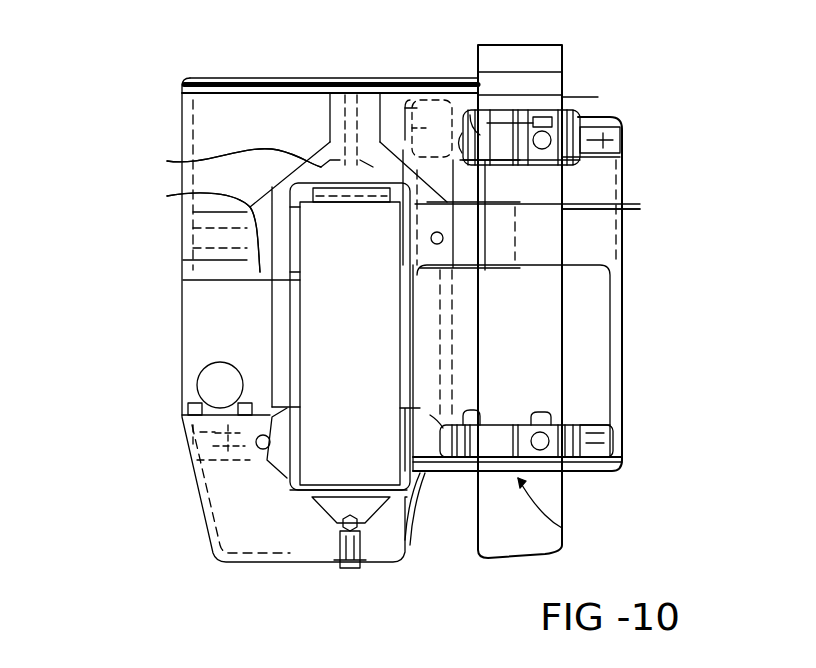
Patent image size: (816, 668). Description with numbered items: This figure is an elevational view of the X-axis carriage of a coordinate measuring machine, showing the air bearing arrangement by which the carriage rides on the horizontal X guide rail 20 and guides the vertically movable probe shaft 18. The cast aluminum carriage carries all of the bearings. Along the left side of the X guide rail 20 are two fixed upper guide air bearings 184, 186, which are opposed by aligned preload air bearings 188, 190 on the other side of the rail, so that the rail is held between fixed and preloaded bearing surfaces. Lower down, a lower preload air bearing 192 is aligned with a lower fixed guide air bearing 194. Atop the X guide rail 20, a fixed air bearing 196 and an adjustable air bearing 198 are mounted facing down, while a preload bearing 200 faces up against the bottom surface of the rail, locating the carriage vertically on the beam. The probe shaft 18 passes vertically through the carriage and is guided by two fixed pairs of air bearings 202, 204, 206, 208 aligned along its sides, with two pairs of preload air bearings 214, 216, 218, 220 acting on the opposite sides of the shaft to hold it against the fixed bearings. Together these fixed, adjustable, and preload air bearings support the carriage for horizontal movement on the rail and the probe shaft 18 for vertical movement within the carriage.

The probe shaft 18 is at (563, 508).
The X guide rail 20 is at (324, 316).
The fixed upper guide air bearing 184 is at (167, 196).
The fixed upper guide air bearing 186 is at (167, 196).
The preload air bearing 188 is at (640, 209).
The preload air bearing 190 is at (683, 220).
The lower preload air bearing 192 is at (273, 470).
The lower fixed guide air bearing 194 is at (413, 537).
The fixed air bearing 196 is at (167, 160).
The adjustable air bearing 198 is at (167, 160).
The preload bearing 200 is at (330, 515).
The fixed air bearing 202 is at (598, 97).
The fixed air bearing 204 is at (543, 413).
The fixed air bearing 206 is at (587, 116).
The fixed air bearing 208 is at (573, 420).
The preload air bearing 214 is at (465, 117).
The preload air bearing 216 is at (470, 477).
The preload air bearing 218 is at (503, 117).
The preload air bearing 220 is at (568, 528).